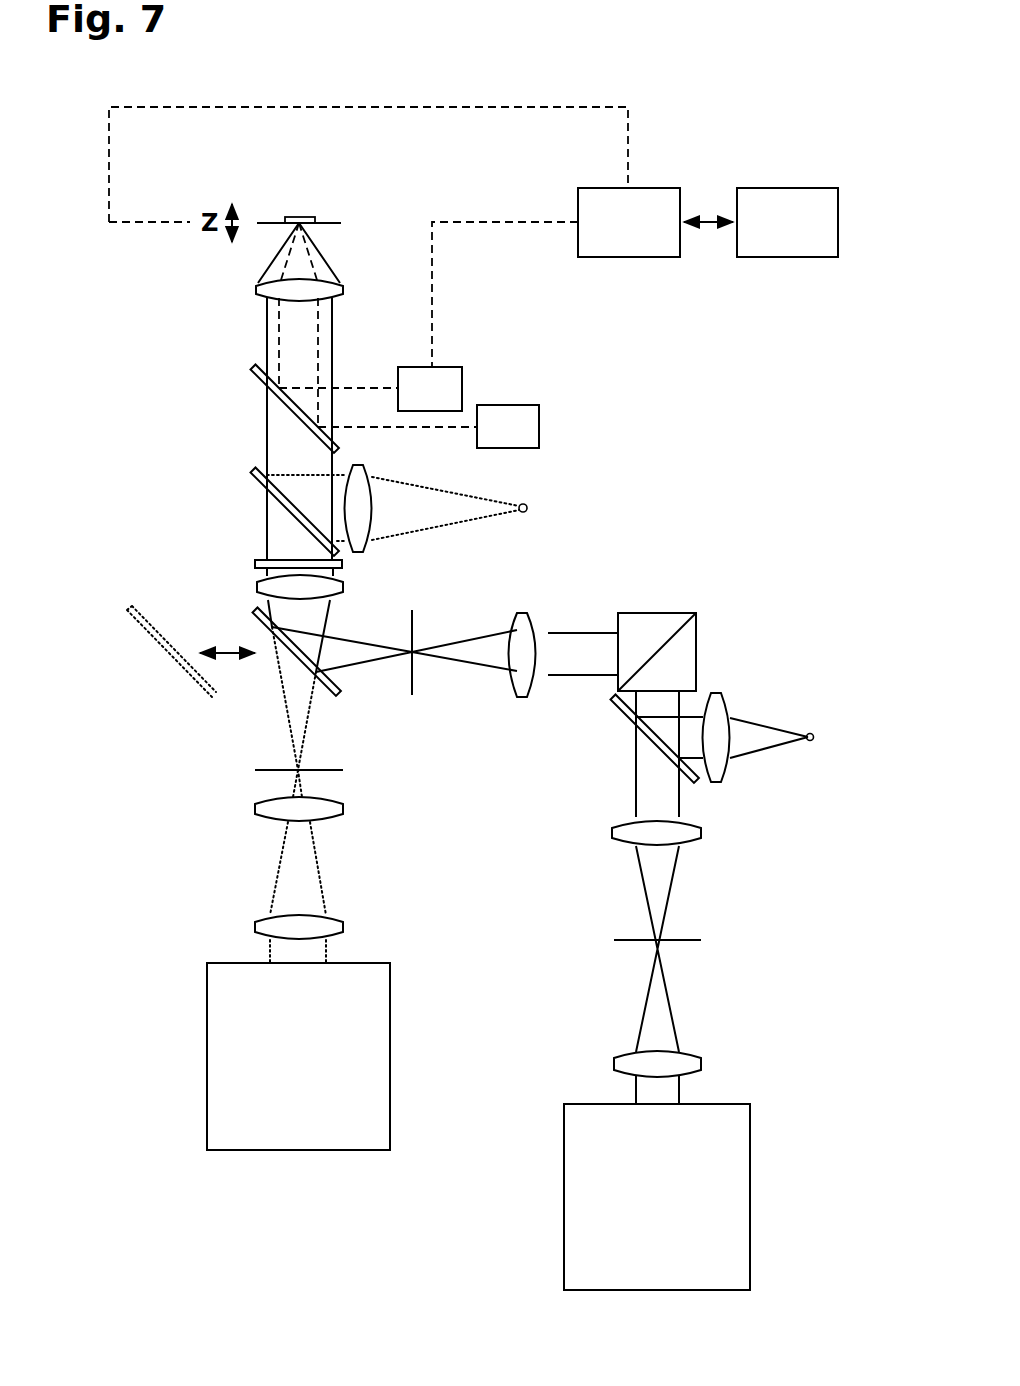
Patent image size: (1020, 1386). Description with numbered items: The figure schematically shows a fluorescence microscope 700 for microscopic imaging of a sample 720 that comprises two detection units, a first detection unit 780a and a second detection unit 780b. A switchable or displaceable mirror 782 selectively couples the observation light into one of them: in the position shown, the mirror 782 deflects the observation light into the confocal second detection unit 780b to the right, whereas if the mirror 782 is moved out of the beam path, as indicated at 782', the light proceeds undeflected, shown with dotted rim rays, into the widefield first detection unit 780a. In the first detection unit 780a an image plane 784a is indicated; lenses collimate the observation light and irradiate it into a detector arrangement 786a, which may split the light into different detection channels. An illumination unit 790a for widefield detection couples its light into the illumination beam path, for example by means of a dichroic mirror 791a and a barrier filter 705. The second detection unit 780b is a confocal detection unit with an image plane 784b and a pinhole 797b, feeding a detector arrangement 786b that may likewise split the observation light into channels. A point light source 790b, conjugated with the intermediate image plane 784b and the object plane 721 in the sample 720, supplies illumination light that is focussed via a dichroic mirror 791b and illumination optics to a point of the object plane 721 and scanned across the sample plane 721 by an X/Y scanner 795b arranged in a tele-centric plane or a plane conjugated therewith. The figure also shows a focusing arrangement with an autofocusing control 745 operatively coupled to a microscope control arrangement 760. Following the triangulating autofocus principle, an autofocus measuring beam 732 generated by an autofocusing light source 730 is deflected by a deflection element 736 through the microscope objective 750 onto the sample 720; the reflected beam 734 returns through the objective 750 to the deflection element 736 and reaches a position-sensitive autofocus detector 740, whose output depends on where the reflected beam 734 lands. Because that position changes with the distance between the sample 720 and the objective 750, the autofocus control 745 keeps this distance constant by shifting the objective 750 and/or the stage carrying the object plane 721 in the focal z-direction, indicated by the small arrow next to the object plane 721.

The microscope 700 is at (648, 482).
The barrier filter 705 is at (254, 563).
The sample 720 is at (300, 216).
The object plane 721 is at (333, 220).
The autofocusing light source 730 is at (507, 404).
The autofocus measuring beam 732 is at (360, 426).
The reflected beam 734 is at (279, 343).
The deflection element 736 is at (259, 380).
The autofocus detector 740 is at (442, 367).
The autofocusing control 745 is at (629, 258).
The microscope objective 750 is at (337, 283).
The microscope control arrangement 760 is at (785, 258).
The first detection unit 780a is at (228, 856).
The second detection unit 780b is at (596, 919).
The mirror 782 is at (358, 692).
The mirror moved-out position 782' is at (129, 651).
The image plane 784a is at (272, 770).
The image plane 784b is at (414, 700).
The detector arrangement 786a is at (206, 1055).
The detector arrangement 786b is at (751, 1198).
The illumination unit 790a is at (527, 505).
The point light source 790b is at (813, 735).
The dichroic mirror 791a is at (259, 482).
The dichroic mirror 791b is at (622, 722).
The X/Y scanner 795b is at (655, 612).
The pinhole 797b is at (690, 938).